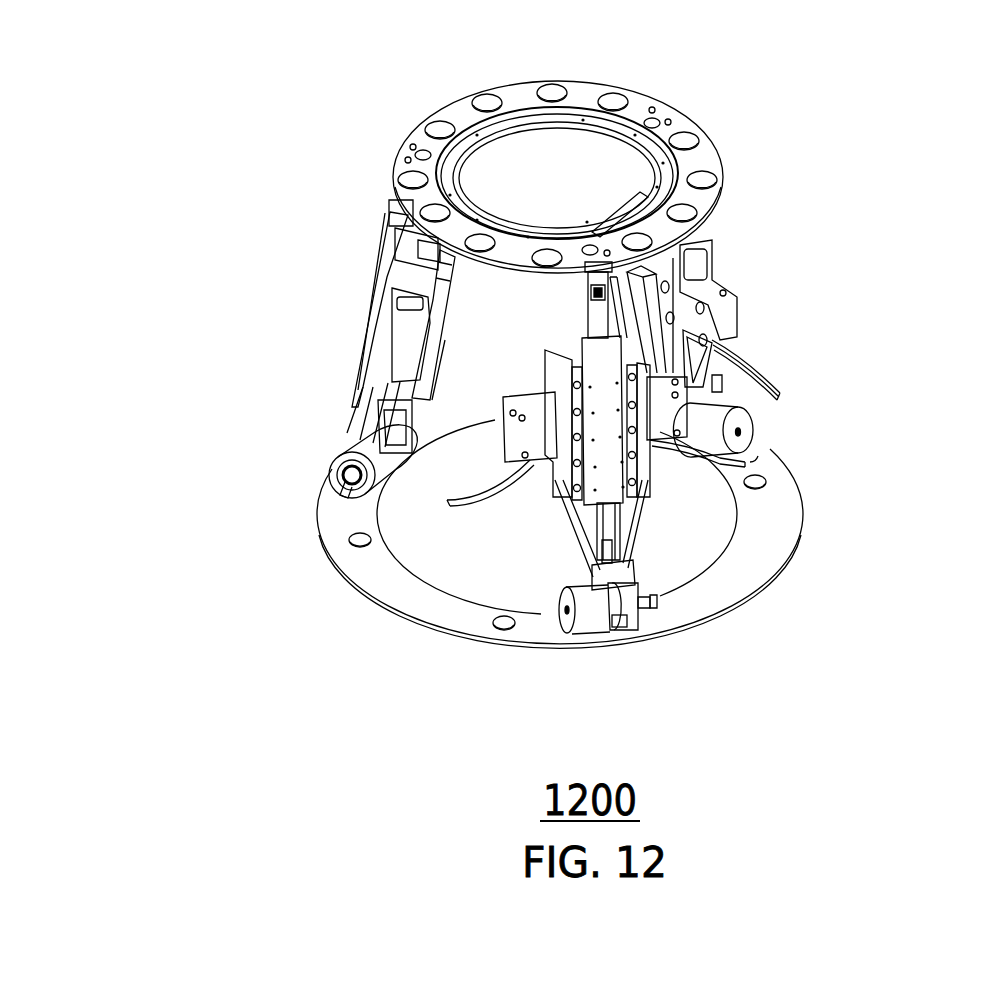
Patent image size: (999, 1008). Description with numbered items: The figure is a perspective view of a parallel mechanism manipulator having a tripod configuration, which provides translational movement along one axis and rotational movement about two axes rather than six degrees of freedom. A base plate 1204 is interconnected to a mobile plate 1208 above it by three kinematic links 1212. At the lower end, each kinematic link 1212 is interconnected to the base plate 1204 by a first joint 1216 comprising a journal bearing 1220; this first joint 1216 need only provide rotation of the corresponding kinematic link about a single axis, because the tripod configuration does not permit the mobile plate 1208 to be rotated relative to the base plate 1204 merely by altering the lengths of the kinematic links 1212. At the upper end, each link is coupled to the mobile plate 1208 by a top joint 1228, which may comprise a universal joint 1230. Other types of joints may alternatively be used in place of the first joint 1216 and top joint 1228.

The base plate 1204 is at (753, 550).
The mobile plate 1208 is at (700, 153).
The kinematic links 1212 is at (640, 310).
The first joint 1216 is at (588, 617).
The journal bearing 1220 is at (653, 600).
The top joint 1228 is at (598, 281).
The universal joint 1230 is at (595, 320).